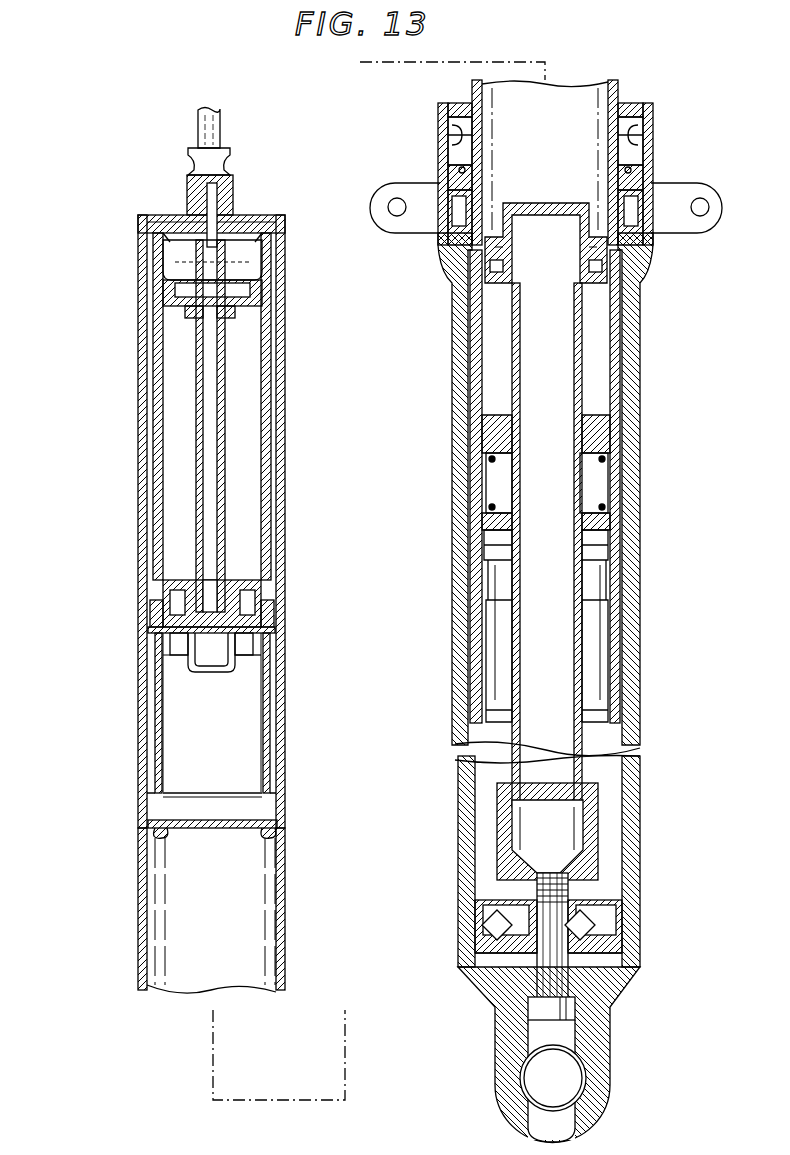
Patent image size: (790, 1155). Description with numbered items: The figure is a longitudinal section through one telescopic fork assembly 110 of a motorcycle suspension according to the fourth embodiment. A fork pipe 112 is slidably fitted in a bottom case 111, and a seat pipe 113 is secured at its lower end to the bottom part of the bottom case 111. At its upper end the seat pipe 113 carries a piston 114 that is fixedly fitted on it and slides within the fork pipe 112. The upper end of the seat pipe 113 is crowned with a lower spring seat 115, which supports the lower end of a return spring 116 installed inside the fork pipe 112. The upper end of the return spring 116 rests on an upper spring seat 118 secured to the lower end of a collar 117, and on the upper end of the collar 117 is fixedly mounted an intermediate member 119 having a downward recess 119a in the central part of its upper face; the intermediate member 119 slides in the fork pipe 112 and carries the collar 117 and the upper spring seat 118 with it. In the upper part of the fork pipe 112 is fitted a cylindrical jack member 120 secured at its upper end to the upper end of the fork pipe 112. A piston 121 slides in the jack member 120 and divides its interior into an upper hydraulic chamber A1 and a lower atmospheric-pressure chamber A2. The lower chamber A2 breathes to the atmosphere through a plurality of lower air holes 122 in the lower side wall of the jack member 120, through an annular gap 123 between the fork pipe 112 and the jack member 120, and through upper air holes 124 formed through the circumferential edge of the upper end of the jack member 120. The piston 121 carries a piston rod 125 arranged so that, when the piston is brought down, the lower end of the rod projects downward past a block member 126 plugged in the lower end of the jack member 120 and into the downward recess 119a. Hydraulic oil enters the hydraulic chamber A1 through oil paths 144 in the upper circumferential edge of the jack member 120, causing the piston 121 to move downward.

The fork assembly 110 is at (650, 525).
The bottom case 111 is at (638, 840).
The fork pipe 112 is at (147, 800).
The seat pipe 113 is at (600, 778).
The piston 114 is at (605, 278).
The lower spring seat 115 is at (600, 247).
The return spring 116 is at (640, 137).
The collar 117 is at (270, 732).
The upper spring seat 118 is at (280, 820).
The intermediate member 119 is at (195, 662).
The downward recess 119a is at (235, 665).
The cylindrical jack member 120 is at (272, 445).
The piston 121 is at (262, 306).
The lower air holes 122 is at (160, 583).
The annular gap 123 is at (152, 400).
The upper air holes 124 is at (150, 238).
The piston rod 125 is at (227, 507).
The block member 126 is at (165, 630).
The oil paths 144 is at (206, 203).
The upper hydraulic chamber A1 is at (170, 257).
The lower atmospheric-pressure chamber A2 is at (172, 447).